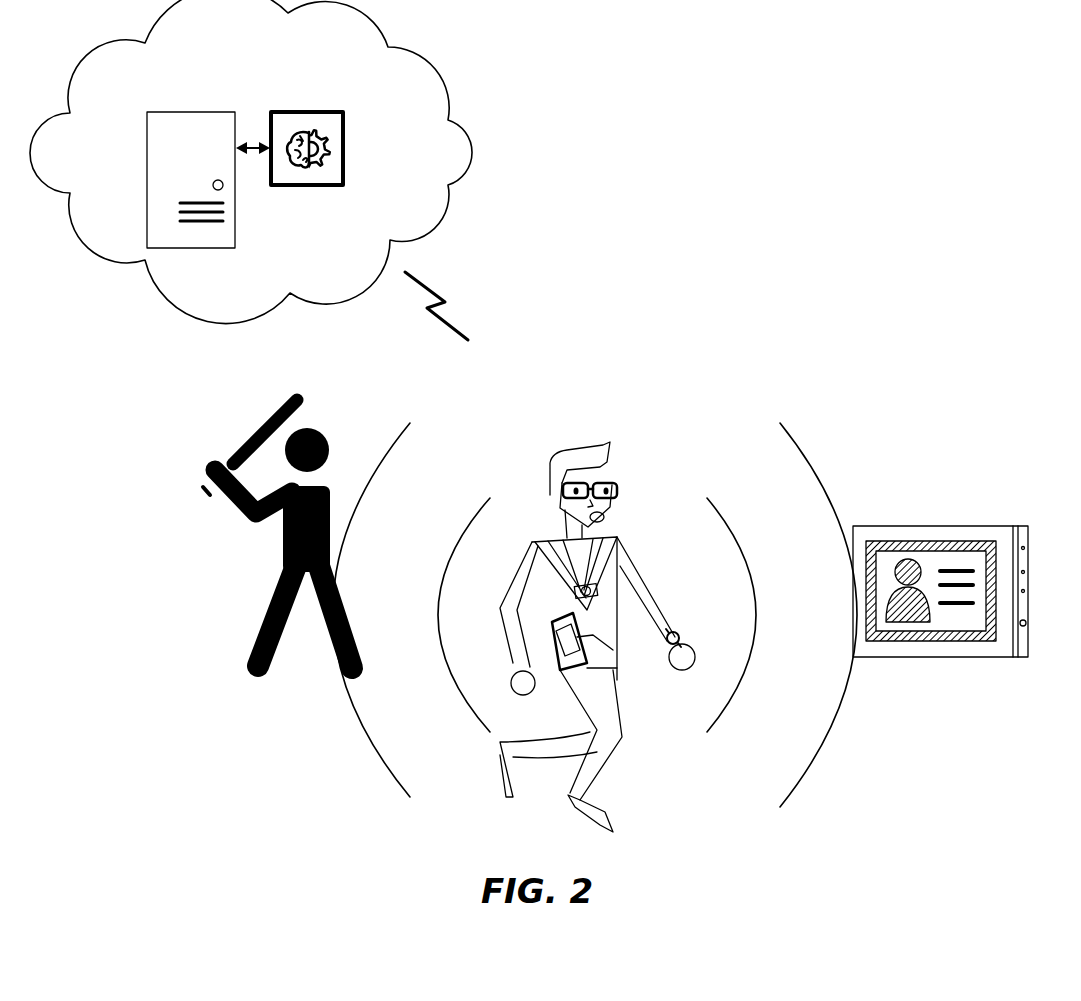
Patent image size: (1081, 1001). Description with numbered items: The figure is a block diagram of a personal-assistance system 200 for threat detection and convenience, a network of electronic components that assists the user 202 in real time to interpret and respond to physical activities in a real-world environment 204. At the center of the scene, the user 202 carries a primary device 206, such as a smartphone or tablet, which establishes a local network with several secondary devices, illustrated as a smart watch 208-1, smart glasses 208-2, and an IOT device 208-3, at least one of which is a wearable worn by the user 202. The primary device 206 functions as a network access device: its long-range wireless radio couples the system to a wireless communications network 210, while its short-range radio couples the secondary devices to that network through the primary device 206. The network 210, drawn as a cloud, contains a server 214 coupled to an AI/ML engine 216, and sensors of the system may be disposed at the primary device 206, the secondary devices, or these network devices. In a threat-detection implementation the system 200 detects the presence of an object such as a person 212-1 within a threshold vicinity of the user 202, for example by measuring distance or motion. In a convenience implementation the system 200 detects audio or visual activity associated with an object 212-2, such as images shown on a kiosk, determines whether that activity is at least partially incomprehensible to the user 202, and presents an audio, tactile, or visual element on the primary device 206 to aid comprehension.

The personal-assistance system 200 is at (944, 109).
The user 202 is at (578, 449).
The real-world environment 204 is at (649, 798).
The primary device 206 is at (550, 624).
The smart watch 208-1 is at (678, 634).
The smart glasses 208-2 is at (614, 483).
The IOT device 208-3 is at (597, 585).
The network 210 is at (198, 53).
The person 212-1 is at (319, 432).
The object 212-2 is at (960, 526).
The server 214 is at (176, 155).
The AI/ML engine 216 is at (311, 112).